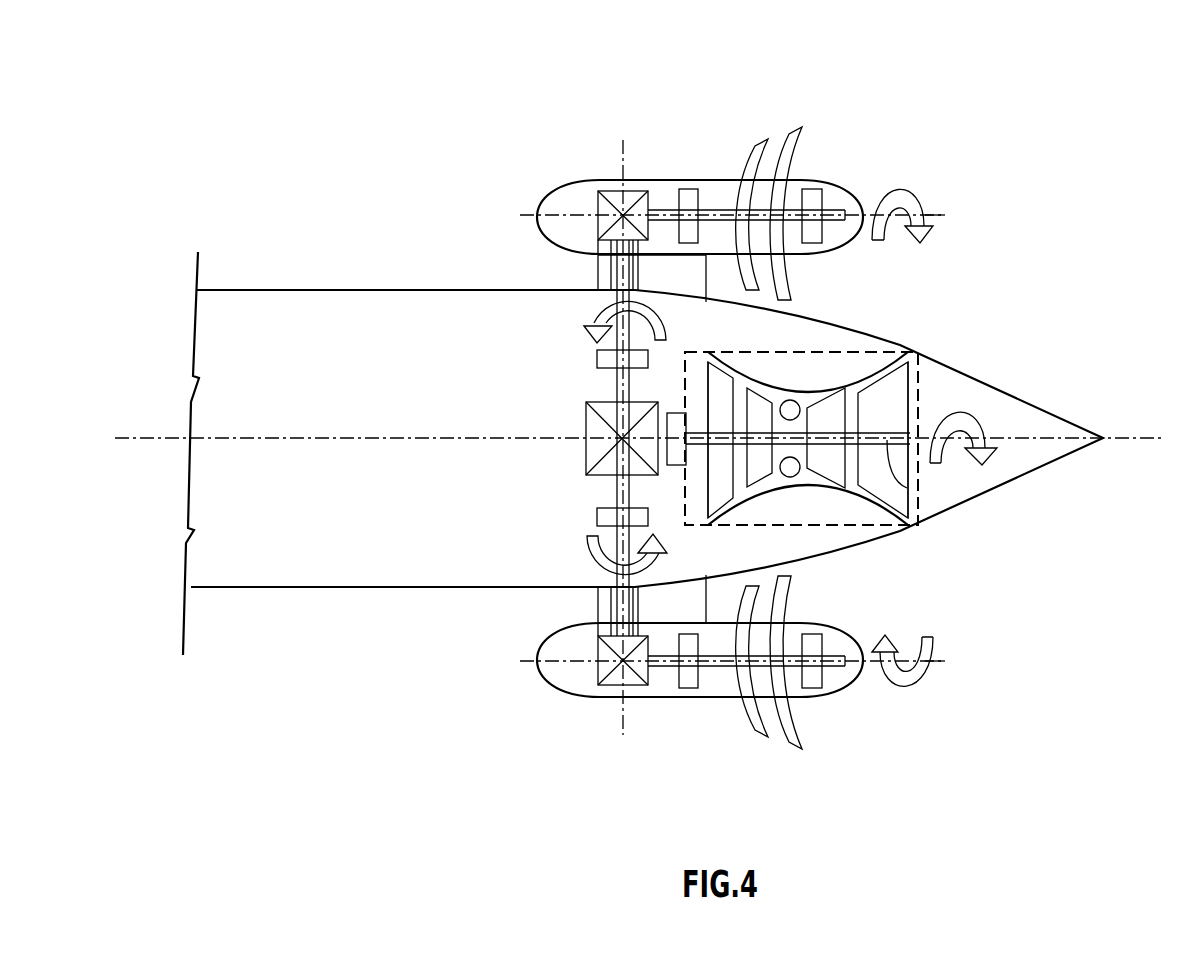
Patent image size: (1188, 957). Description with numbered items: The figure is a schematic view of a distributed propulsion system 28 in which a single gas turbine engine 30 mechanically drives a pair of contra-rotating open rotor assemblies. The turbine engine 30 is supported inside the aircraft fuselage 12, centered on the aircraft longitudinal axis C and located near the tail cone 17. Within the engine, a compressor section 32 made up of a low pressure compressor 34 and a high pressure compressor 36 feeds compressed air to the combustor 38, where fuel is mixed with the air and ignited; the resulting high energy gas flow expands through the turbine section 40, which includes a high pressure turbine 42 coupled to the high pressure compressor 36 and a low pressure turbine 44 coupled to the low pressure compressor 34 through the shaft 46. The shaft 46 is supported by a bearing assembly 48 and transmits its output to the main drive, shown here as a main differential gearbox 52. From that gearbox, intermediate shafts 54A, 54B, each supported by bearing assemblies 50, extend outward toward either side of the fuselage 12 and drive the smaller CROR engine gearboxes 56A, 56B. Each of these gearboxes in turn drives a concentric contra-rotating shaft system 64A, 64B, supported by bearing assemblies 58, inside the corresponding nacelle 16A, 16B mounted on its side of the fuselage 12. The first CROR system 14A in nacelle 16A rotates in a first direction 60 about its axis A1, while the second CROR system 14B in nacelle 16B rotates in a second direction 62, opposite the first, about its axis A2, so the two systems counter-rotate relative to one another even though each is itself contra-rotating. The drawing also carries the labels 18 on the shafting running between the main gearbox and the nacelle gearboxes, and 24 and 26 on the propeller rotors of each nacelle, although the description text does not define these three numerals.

The aircraft fuselage 12 is at (657, 435).
The first CROR system 14A is at (892, 84).
The second CROR system 14B is at (930, 814).
The nacelle 16A is at (642, 182).
The nacelle 16B is at (648, 698).
The tail cone 17 is at (1068, 400).
The vertical drive shaft 18 is at (586, 268).
The first propeller blade 24 is at (764, 141).
The second propeller blade 26 is at (795, 140).
The distributed propulsion system 28 is at (1038, 234).
The turbine engine 30 is at (840, 517).
The compressor section 32 is at (770, 375).
The low pressure compressor 34 is at (690, 498).
The high pressure compressor 36 is at (760, 470).
The combustor 38 is at (790, 470).
The turbine section 40 is at (815, 373).
The high pressure turbine 42 is at (833, 417).
The low pressure turbine 44 is at (887, 412).
The shaft 46 is at (905, 488).
The bearing assembly 48 is at (670, 453).
The bearing assemblies 50 is at (597, 358).
The main differential gearbox 52 is at (573, 448).
The intermediate shaft 54A is at (617, 387).
The intermediate shaft 54B is at (616, 490).
The CROR engine gearbox 56A is at (610, 203).
The CROR engine gearbox 56B is at (610, 678).
The bearing assemblies 58 is at (688, 190).
The first direction 60 is at (905, 190).
The second direction 62 is at (913, 688).
The contra-rotating shaft system 64A is at (720, 212).
The contra-rotating shaft system 64B is at (723, 668).
The CROR axis A1 is at (938, 215).
The CROR axis A2 is at (936, 663).
The aircraft longitudinal axis C is at (1143, 438).